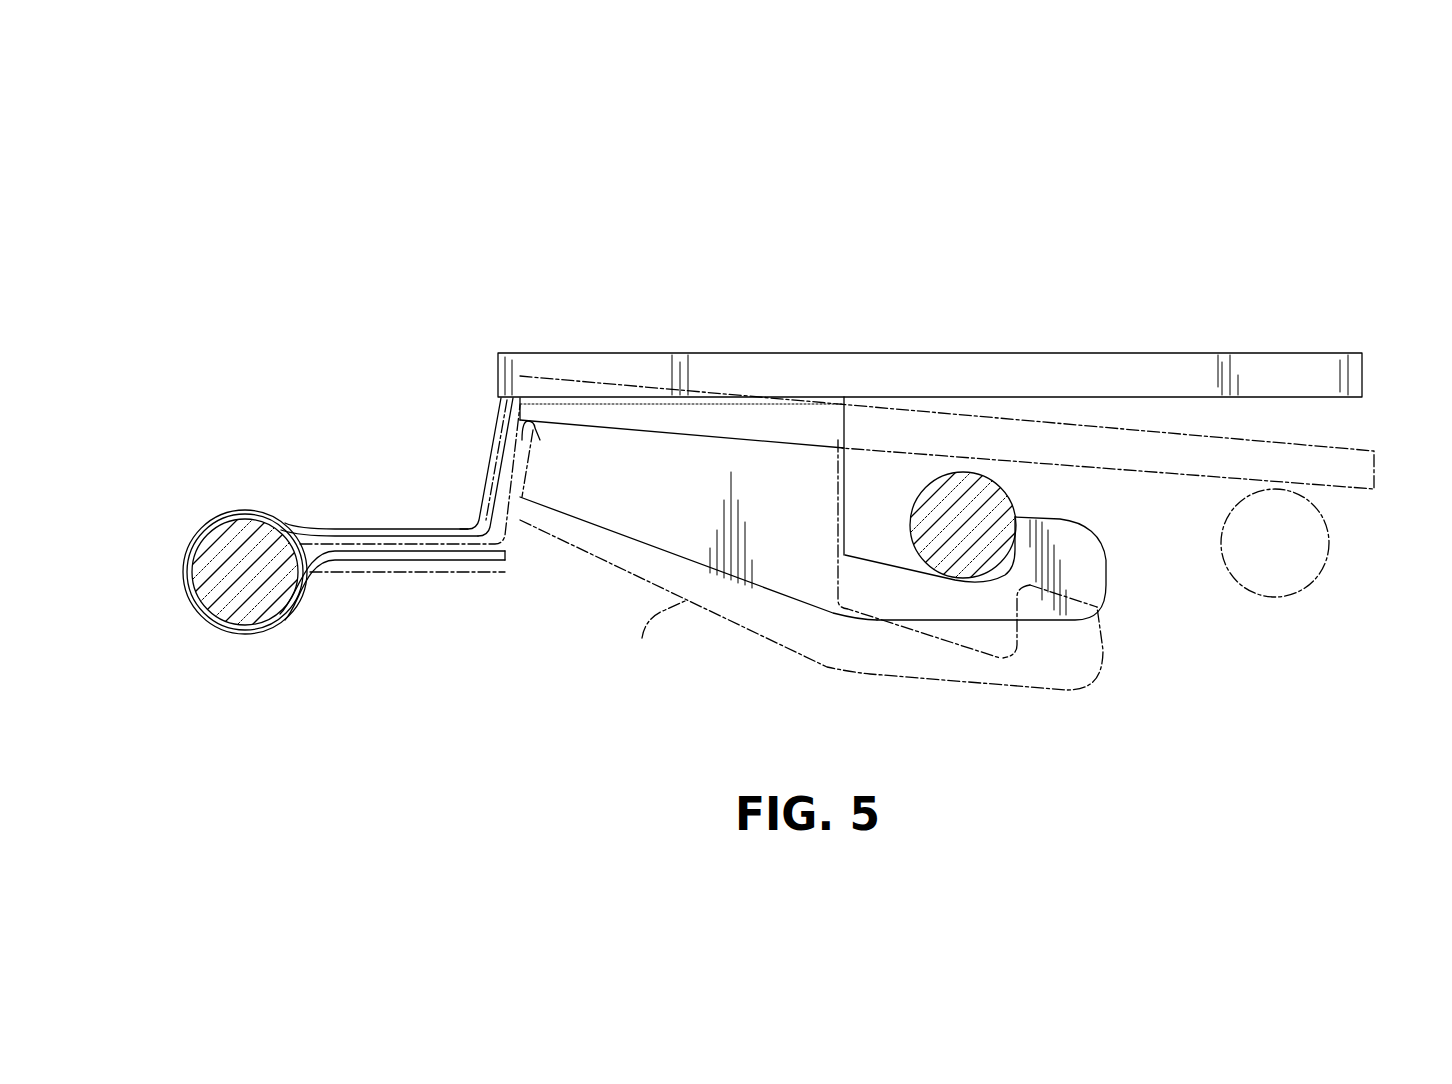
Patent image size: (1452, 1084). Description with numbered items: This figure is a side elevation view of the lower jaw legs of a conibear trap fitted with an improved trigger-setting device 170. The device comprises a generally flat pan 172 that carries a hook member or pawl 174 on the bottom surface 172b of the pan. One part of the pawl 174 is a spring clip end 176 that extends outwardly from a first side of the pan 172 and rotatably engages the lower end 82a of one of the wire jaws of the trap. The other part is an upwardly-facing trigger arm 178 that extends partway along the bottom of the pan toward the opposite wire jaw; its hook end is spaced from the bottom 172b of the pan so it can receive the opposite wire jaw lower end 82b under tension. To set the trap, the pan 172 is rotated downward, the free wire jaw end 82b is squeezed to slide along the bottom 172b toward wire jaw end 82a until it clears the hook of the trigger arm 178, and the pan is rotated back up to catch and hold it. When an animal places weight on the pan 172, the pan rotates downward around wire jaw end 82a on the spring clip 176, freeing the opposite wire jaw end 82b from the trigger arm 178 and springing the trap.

The trigger-setting device 170 is at (487, 303).
The pan 172 is at (999, 372).
The bottom surface of the pan 172b is at (1315, 397).
The pawl 174 is at (652, 530).
The spring clip end 176 is at (398, 527).
The trigger arm 178 is at (915, 610).
The lower end of wire jaw 82a is at (243, 562).
The opposite wire jaw lower end 82b is at (970, 553).